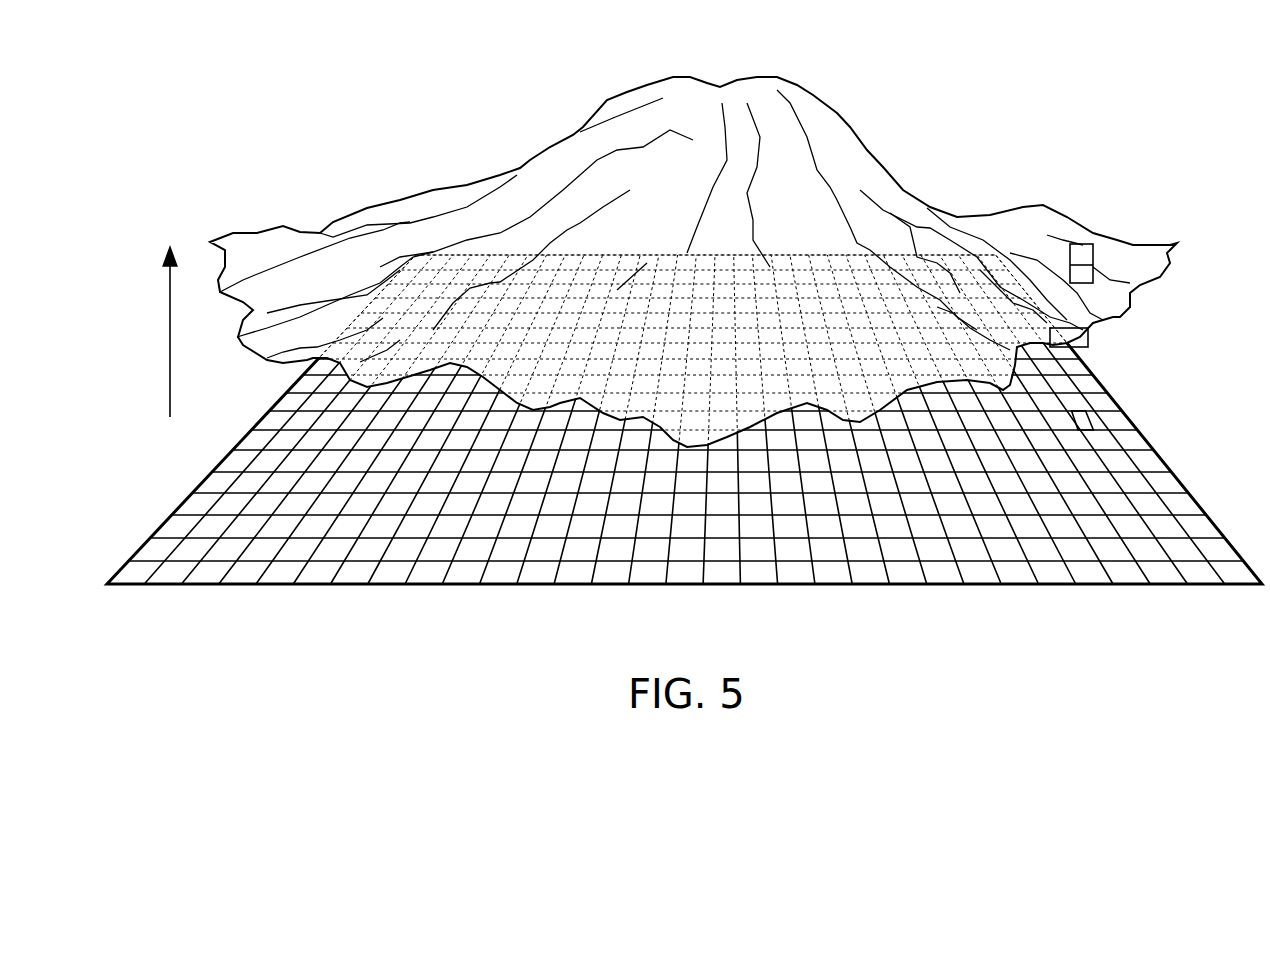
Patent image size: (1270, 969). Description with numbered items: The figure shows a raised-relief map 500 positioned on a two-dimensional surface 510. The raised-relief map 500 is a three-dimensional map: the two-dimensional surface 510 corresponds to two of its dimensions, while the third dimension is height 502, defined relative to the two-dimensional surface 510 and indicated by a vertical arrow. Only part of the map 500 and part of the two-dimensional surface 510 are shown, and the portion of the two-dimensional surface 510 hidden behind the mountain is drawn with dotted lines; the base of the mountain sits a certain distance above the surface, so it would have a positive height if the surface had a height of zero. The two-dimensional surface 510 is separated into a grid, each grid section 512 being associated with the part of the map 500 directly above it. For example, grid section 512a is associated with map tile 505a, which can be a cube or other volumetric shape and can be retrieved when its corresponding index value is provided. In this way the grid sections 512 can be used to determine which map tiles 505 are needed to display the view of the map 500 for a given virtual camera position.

The raised-relief map 500 is at (827, 130).
The height 502 is at (172, 366).
The map tiles 505 is at (1075, 252).
The map tile 505a is at (1088, 335).
The 2D surface 510 is at (1102, 587).
The grid section (tile) 512 is at (583, 572).
The grid section (tile) 512a is at (1087, 420).